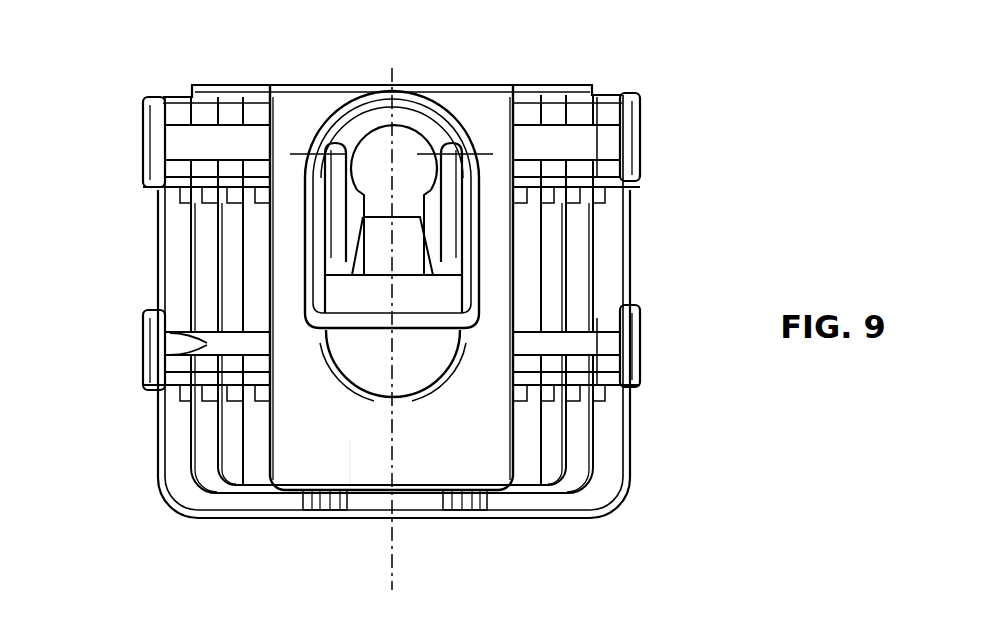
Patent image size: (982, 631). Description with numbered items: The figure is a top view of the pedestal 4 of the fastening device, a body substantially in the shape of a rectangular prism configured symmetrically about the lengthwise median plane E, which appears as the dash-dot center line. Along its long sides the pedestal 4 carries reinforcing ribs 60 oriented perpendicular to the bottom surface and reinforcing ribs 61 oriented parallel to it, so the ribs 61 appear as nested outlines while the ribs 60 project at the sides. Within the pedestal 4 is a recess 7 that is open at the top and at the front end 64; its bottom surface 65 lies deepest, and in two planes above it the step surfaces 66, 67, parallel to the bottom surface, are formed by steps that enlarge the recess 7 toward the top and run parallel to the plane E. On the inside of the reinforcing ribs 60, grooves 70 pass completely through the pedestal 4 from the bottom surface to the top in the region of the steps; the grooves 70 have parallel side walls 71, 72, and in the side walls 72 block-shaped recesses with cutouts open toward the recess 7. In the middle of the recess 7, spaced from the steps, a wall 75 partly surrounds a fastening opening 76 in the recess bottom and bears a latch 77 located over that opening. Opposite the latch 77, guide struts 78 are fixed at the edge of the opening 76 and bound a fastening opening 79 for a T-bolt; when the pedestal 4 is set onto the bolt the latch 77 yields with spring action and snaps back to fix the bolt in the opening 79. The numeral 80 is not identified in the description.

The pedestal 4 is at (160, 512).
The recess 7 is at (413, 450).
The reinforcing ribs 60 is at (640, 143).
The reinforcing ribs 61 is at (612, 256).
The front end 64 is at (290, 85).
The bottom surface 65 is at (367, 458).
The step surface 66 is at (262, 455).
The step surface 67 is at (232, 455).
The grooves 70 is at (575, 130).
The side wall 71 is at (165, 335).
The side wall 72 is at (152, 366).
The wall 75 is at (433, 85).
The fastening opening 76 is at (436, 372).
The latch 77 is at (370, 225).
The guide struts 78 is at (373, 120).
The fastening opening 79 is at (425, 137).
The base 80 is at (497, 520).
The lengthwise median plane E is at (390, 410).